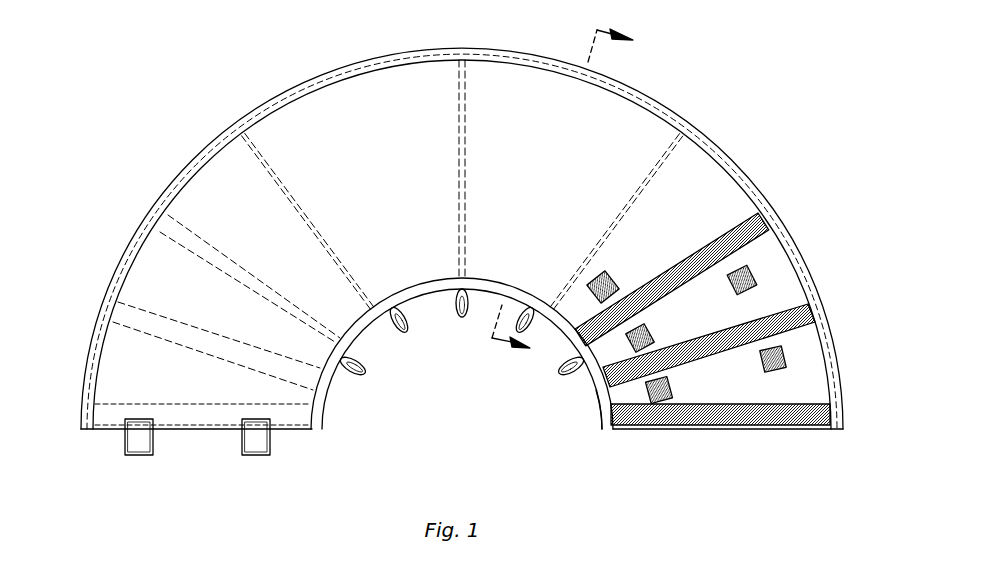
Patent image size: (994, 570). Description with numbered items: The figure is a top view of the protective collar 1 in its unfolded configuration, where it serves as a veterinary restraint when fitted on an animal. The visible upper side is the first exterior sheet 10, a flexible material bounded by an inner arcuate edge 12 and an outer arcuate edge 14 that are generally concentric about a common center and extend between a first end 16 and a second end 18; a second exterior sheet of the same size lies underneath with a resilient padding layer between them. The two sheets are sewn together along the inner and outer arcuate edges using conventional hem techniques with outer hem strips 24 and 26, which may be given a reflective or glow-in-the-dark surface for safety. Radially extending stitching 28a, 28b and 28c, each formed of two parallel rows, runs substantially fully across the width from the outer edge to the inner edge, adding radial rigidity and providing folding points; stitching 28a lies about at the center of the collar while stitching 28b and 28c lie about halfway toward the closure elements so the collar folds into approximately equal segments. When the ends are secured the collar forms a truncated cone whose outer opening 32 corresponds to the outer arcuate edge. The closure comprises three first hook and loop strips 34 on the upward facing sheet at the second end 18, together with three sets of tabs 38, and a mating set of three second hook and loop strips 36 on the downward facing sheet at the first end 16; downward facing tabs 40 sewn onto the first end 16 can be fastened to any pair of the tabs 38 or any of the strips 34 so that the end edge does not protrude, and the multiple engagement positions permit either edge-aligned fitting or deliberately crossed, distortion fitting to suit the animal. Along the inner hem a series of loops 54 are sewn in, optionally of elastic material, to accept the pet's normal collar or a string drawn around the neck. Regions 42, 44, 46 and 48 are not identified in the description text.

The protective collar 1 is at (457, 261).
The first exterior sheet 10 is at (393, 93).
The inner arcuate edge 12 is at (567, 347).
The outer arcuate edge 14 is at (670, 107).
The first end 16 is at (210, 432).
The second end 18 is at (717, 435).
The outer hem strip 24 is at (300, 85).
The hem strip 26 is at (600, 412).
The radially extending stitching 28a is at (240, 130).
The radially extending stitching 28b is at (463, 77).
The radially extending stitching 28c is at (677, 140).
The outer opening 32 is at (325, 403).
The first hook and loop strips 34 is at (817, 413).
The second hook and loop strips 36 is at (190, 223).
The tabs 38 is at (138, 457).
The downward facing tabs 40 is at (255, 457).
The first panel section 42 is at (362, 176).
The second panel section 44 is at (532, 176).
The third panel section 46 is at (209, 311).
The fourth panel section 48 is at (637, 251).
The loops 54 is at (407, 327).